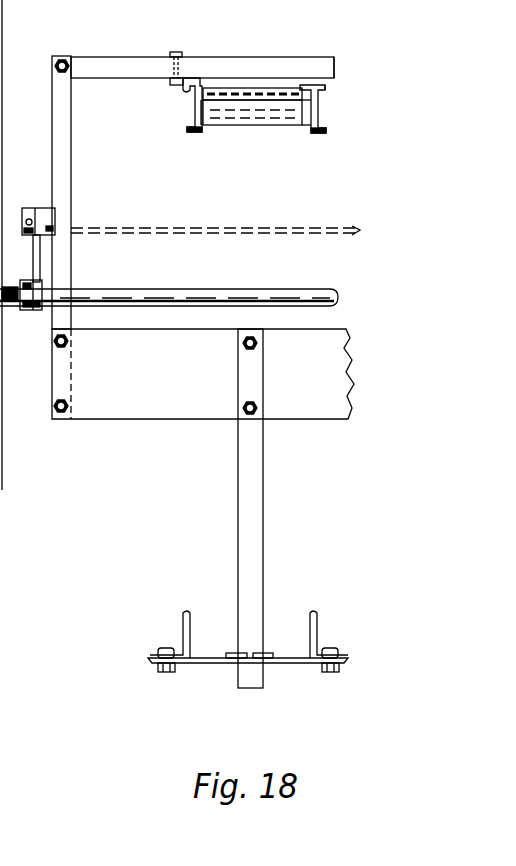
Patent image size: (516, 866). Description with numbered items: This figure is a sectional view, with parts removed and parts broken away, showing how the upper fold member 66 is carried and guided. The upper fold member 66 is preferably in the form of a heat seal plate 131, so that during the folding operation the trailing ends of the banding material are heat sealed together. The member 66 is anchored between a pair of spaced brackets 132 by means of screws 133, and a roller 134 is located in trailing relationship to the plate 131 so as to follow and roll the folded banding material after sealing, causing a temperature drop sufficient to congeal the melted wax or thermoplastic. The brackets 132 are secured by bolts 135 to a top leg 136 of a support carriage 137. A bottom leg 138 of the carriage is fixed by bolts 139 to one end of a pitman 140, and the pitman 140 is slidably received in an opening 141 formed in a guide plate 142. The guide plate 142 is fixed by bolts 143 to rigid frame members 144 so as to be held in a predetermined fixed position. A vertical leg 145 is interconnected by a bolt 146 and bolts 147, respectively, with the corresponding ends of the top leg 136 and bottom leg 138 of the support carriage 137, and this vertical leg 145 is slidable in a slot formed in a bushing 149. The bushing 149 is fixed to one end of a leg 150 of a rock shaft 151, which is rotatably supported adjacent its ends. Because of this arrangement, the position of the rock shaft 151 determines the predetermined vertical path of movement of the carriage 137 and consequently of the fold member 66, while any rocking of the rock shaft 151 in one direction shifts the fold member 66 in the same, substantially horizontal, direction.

The upper fold member 66 is at (348, 100).
The heat seal plate 131 is at (268, 125).
The brackets 132 is at (192, 94).
The screws 133 is at (190, 127).
The roller 134 is at (258, 90).
The bolts 135 is at (181, 53).
The top leg 136 is at (245, 68).
The support carriage 137 is at (335, 56).
The bottom leg 138 is at (150, 292).
The bolts 139 is at (262, 343).
The pitman 140 is at (253, 497).
The opening 141 is at (263, 662).
The guide plate 142 is at (345, 663).
The bolts 143 is at (166, 648).
The rigid frame members 144 is at (196, 600).
The vertical leg 145 is at (70, 164).
The bolt 146 is at (68, 60).
The bolts 147 is at (57, 348).
The bushing 149 is at (46, 222).
The leg 150 is at (40, 262).
The rock shaft 151 is at (216, 300).